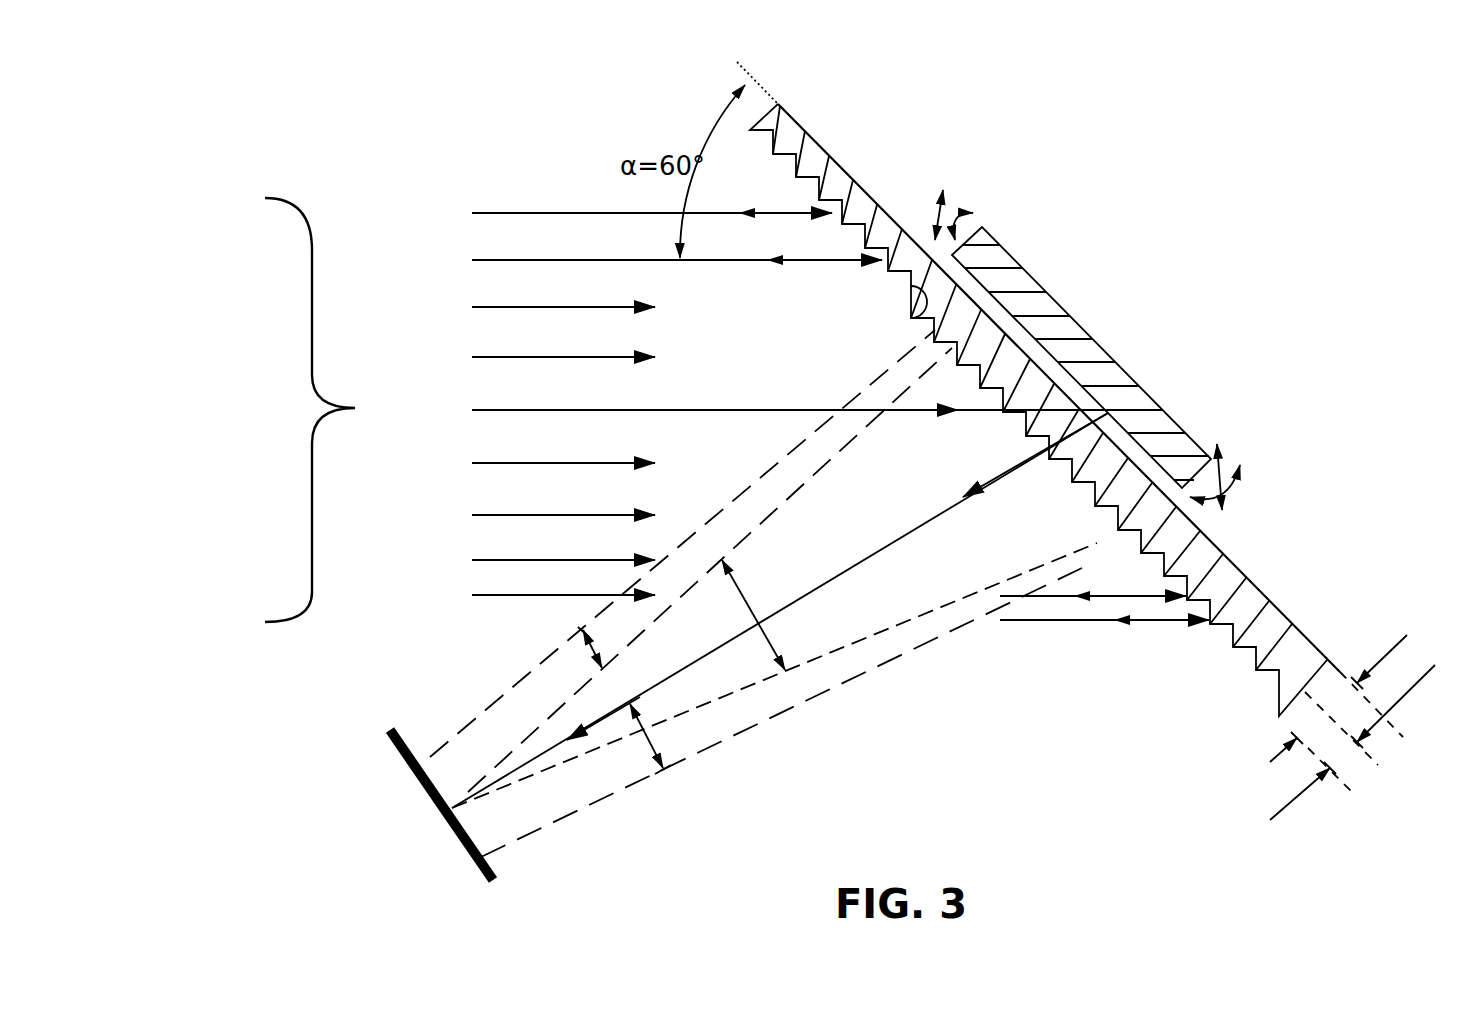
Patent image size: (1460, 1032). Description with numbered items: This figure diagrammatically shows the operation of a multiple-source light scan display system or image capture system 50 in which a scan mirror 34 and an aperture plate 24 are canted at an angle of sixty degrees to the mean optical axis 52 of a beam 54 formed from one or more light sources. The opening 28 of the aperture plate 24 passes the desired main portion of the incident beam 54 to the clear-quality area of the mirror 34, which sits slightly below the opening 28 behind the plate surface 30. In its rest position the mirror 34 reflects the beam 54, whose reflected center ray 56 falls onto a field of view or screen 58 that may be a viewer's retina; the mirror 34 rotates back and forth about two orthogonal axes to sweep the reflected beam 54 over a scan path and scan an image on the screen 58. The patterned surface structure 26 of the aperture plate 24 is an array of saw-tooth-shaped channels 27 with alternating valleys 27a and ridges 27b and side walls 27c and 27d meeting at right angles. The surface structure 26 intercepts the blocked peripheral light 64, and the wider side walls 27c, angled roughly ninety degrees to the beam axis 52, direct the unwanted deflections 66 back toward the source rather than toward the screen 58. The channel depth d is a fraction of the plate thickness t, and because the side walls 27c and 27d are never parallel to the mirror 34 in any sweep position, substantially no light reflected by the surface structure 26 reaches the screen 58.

The aperture plate 24 is at (815, 130).
The patterned surface structure 26 is at (1050, 712).
The saw-tooth-shaped channels 27 is at (1277, 672).
The valleys 27a is at (1082, 493).
The ridges 27b is at (1086, 509).
The side walls 27c is at (1267, 727).
The side walls 27d is at (1240, 648).
The opening 28 is at (928, 300).
The substrate surface 30 is at (1293, 611).
The scan mirror 34 is at (1010, 330).
The multiple-source light scan display system 50 is at (630, 112).
The mean optical axis 52 is at (483, 406).
The beam 54 is at (377, 410).
The center ray 56 is at (537, 728).
The screen 58 is at (476, 838).
The blocked peripheral light 64 is at (823, 218).
The unwanted deflections 66 is at (742, 206).